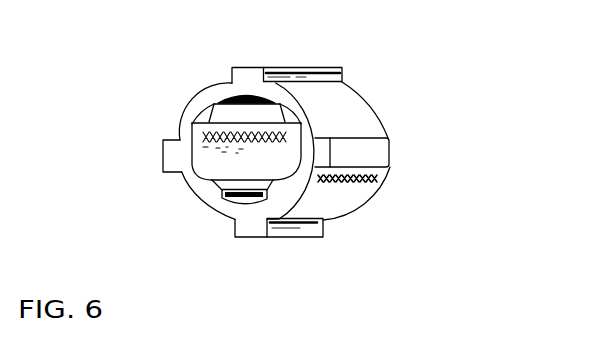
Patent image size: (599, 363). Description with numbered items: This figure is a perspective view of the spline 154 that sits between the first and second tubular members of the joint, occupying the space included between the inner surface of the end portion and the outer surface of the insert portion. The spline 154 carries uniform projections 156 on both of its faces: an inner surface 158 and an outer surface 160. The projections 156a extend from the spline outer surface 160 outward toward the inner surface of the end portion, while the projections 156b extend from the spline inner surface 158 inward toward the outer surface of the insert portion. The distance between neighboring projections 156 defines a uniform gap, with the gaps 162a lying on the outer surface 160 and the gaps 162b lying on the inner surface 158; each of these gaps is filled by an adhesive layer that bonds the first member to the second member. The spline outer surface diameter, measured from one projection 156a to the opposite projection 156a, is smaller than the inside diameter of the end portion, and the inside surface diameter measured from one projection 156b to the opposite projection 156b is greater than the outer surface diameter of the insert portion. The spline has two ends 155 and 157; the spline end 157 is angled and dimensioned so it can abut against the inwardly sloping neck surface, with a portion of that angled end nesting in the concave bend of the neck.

The spline 154 is at (199, 192).
The spline end 155 is at (231, 68).
The projections 156 is at (264, 67).
The outer projections 156a is at (390, 150).
The inner projections 156b is at (213, 110).
The angled spline end 157 is at (292, 67).
The spline inner surface 158 is at (231, 183).
The spline outer surface 160 is at (359, 105).
The outer gaps 162a is at (333, 95).
The inner gaps 162b is at (188, 159).